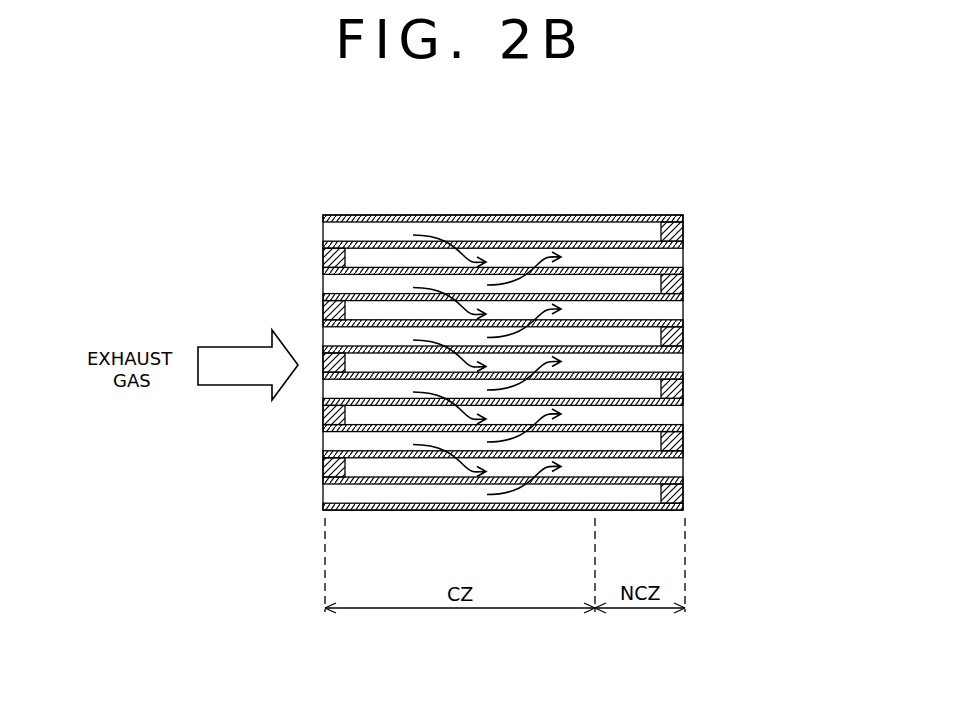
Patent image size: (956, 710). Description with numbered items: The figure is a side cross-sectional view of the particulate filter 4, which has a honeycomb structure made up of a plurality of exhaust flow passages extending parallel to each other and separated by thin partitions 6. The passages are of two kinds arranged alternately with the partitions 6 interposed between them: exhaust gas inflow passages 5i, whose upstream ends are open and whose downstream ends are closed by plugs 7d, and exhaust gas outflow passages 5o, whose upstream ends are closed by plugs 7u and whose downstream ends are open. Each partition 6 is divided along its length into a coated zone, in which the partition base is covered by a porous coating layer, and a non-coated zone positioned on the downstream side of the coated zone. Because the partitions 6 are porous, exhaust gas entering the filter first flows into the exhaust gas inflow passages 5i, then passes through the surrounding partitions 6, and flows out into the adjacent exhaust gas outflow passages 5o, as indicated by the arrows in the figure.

The particulate filter 4 is at (653, 177).
The exhaust gas inflow passage 5i is at (373, 490).
The exhaust gas outflow passage 5o is at (400, 262).
The partition 6 is at (483, 216).
The plug 7u is at (323, 310).
The plug 7d is at (683, 283).